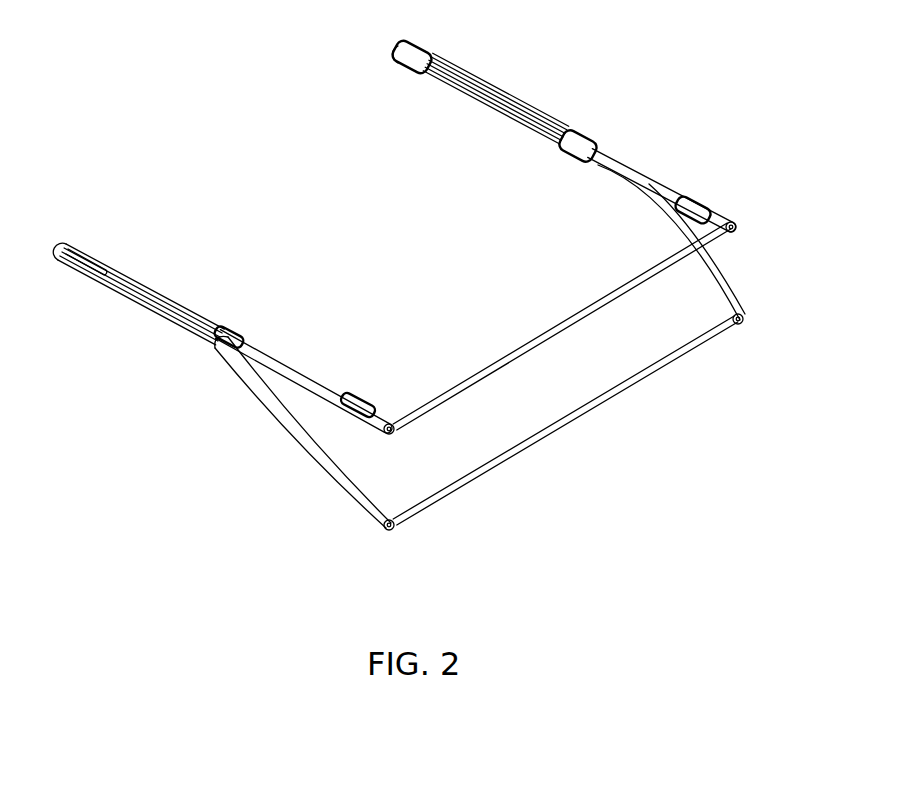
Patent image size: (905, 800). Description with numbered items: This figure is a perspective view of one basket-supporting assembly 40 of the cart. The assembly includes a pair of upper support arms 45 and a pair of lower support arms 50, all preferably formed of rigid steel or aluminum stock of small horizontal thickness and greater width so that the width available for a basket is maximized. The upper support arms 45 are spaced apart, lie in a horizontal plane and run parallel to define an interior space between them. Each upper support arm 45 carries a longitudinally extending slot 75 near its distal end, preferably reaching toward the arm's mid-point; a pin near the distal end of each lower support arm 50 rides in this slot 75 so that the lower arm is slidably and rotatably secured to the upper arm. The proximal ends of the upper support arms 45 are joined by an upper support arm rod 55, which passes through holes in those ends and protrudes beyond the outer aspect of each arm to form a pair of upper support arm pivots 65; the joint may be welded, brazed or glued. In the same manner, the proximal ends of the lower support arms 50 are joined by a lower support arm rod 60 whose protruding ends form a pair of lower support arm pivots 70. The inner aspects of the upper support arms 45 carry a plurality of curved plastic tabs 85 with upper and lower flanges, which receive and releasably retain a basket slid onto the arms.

The basket-supporting assembly 40 is at (160, 437).
The upper support arm 45 is at (310, 390).
The lower support arm 50 is at (335, 438).
The upper support arm rod 55 is at (617, 283).
The lower support arm rod 60 is at (648, 378).
The upper support arm pivot 65 is at (398, 427).
The lower support arm pivot 70 is at (380, 530).
The slot 75 is at (105, 285).
The tab 85 is at (414, 44).